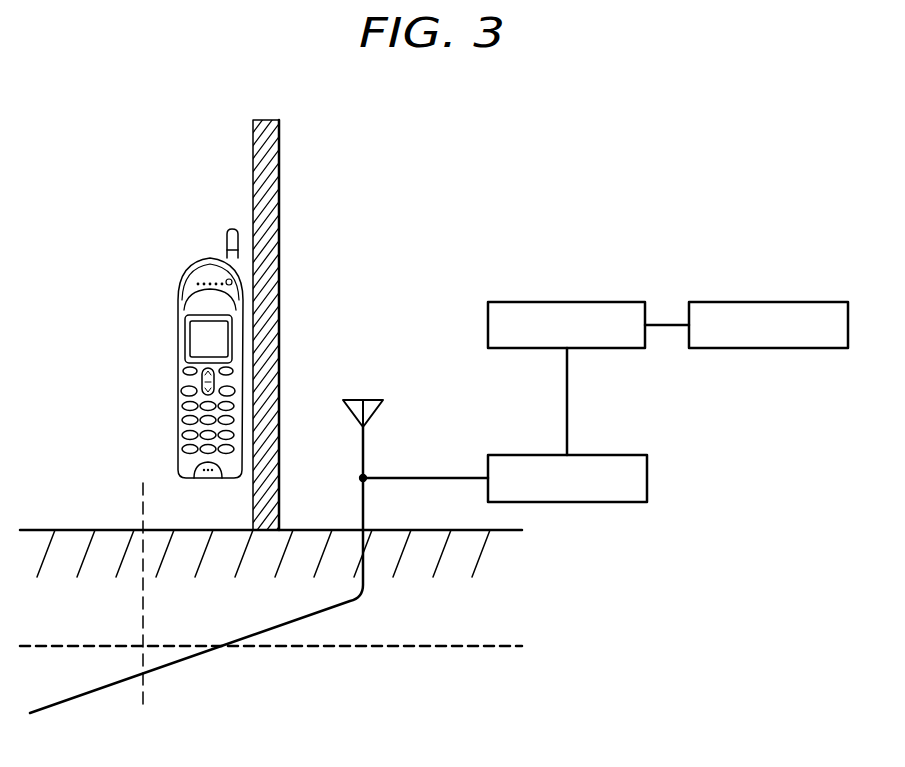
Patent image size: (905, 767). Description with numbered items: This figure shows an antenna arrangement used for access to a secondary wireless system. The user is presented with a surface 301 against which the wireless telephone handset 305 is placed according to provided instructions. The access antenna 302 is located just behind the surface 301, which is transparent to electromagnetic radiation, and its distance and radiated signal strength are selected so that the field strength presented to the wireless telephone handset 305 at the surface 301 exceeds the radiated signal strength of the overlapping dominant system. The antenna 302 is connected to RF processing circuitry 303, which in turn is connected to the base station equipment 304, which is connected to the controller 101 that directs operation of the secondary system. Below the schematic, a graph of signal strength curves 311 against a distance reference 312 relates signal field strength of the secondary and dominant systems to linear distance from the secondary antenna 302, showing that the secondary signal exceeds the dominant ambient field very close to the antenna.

The controller 101 is at (769, 300).
The surface 301 is at (280, 172).
The antenna 302 is at (365, 452).
The RF processing circuitry 303 is at (611, 455).
The base station equipment 304 is at (568, 300).
The wireless telephone handset 305 is at (215, 258).
The cable 311 is at (345, 605).
The dashed reference line 312 is at (323, 650).